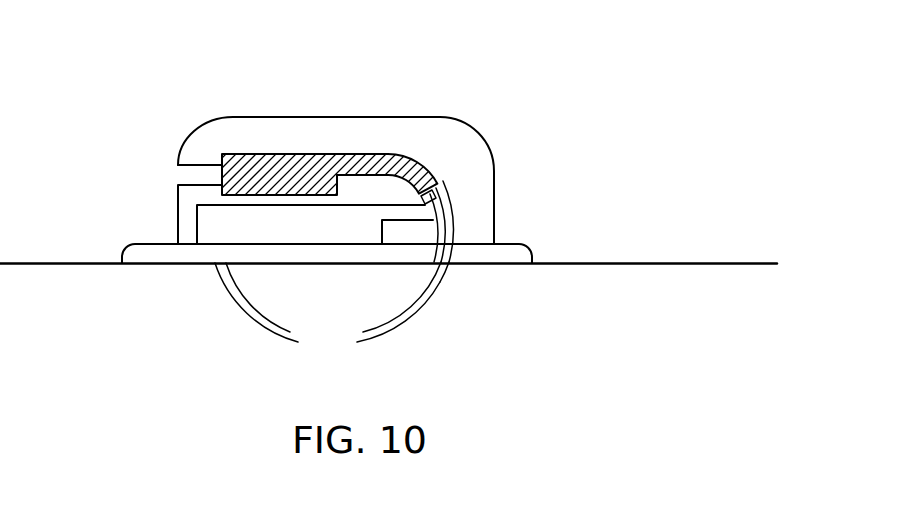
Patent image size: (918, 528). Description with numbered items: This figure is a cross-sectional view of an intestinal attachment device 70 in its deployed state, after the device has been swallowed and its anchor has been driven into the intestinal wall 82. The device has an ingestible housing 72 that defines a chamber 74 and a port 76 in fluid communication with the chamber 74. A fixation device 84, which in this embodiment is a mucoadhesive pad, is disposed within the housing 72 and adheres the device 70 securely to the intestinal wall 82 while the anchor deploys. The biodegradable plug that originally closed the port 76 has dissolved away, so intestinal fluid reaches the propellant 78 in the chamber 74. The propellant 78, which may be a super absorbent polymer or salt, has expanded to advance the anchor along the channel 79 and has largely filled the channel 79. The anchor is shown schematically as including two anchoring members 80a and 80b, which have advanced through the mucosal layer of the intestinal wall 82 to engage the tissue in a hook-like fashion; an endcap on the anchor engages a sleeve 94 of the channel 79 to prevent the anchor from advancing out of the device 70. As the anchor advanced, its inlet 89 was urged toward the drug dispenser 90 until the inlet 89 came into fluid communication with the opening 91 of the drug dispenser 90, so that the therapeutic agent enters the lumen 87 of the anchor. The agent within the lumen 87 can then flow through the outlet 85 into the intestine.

The intestinal attachment device 70 is at (178, 87).
The ingestible housing 72 is at (452, 118).
The chamber 74 is at (318, 155).
The port 76 is at (185, 175).
The propellant 78 is at (274, 158).
The channel 79 is at (447, 215).
The anchoring member 80a is at (433, 280).
The anchoring member 80b is at (232, 298).
The intestinal wall 82 is at (627, 262).
The fixation device 84 is at (137, 257).
The outlet 85 is at (363, 337).
The lumen 87 is at (402, 315).
The inlet 89 is at (440, 212).
The drug dispenser 90 is at (262, 228).
The opening of drug dispenser 91 is at (415, 208).
The sleeve 94 is at (440, 195).